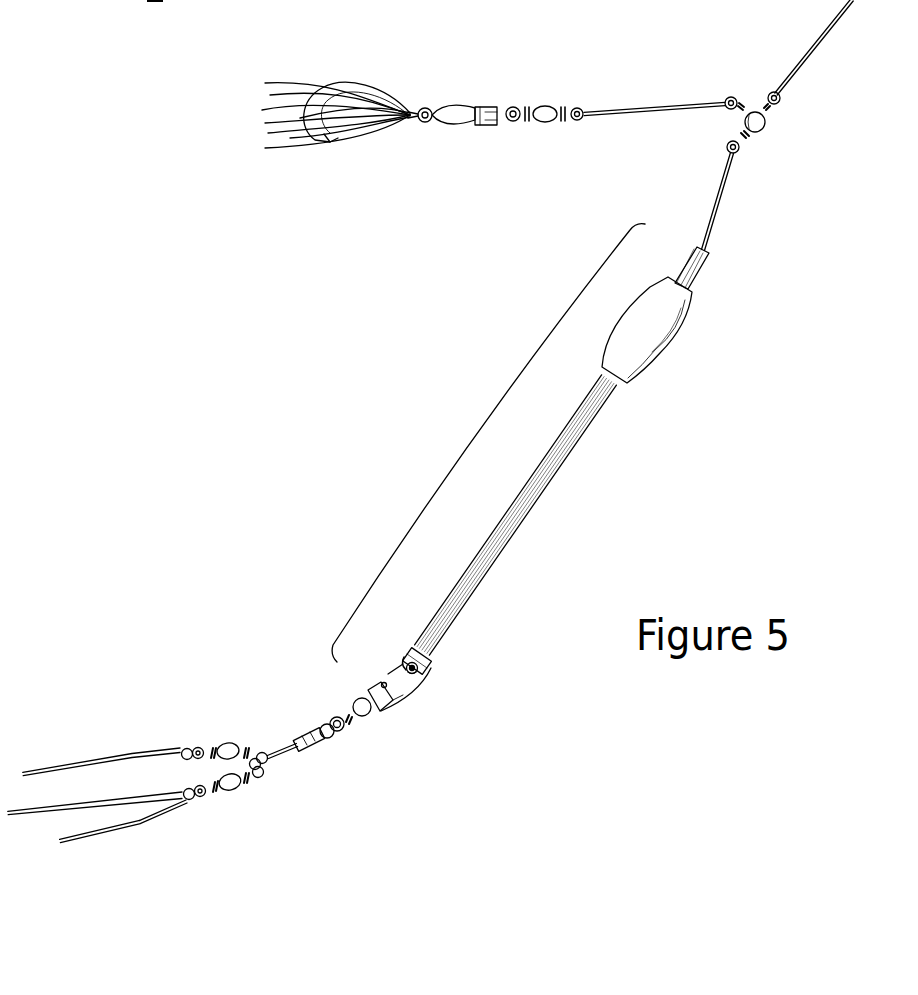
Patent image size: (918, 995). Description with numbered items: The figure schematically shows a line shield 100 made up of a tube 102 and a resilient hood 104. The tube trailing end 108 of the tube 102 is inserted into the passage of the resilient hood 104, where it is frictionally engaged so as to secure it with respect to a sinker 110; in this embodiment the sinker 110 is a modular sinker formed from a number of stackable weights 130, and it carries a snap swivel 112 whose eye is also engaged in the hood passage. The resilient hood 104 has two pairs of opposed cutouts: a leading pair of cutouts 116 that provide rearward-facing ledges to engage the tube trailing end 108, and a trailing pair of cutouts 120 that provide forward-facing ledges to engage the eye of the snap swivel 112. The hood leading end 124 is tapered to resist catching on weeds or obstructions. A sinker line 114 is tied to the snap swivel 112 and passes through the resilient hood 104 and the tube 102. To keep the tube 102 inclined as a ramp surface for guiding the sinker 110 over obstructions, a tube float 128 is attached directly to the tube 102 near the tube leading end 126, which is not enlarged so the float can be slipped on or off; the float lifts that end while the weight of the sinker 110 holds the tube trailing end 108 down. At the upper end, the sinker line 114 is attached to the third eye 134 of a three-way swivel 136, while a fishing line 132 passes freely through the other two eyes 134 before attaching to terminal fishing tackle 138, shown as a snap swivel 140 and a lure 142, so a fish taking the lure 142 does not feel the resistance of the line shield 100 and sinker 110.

The line shield 100 is at (477, 435).
The tube 102 is at (545, 507).
The resilient hood 104 is at (420, 697).
The tube trailing end 108 is at (406, 656).
The sinker 110 is at (194, 725).
The snap swivel 112 is at (327, 740).
The sinker line 114 is at (717, 210).
The leading pair of cutouts 116 is at (418, 676).
The trailing pair of cutouts 120 is at (394, 680).
The hood leading end 124 is at (433, 663).
The tube leading end 126 is at (705, 258).
The tube float 128 is at (648, 342).
The stackable weights 130 is at (133, 800).
The fishing line 132 is at (652, 118).
The eyes 134 is at (734, 143).
The three-way swivel 136 is at (765, 135).
The terminal fishing tackle 138 is at (338, 166).
The snap swivel 140 is at (508, 123).
The lure 142 is at (387, 117).